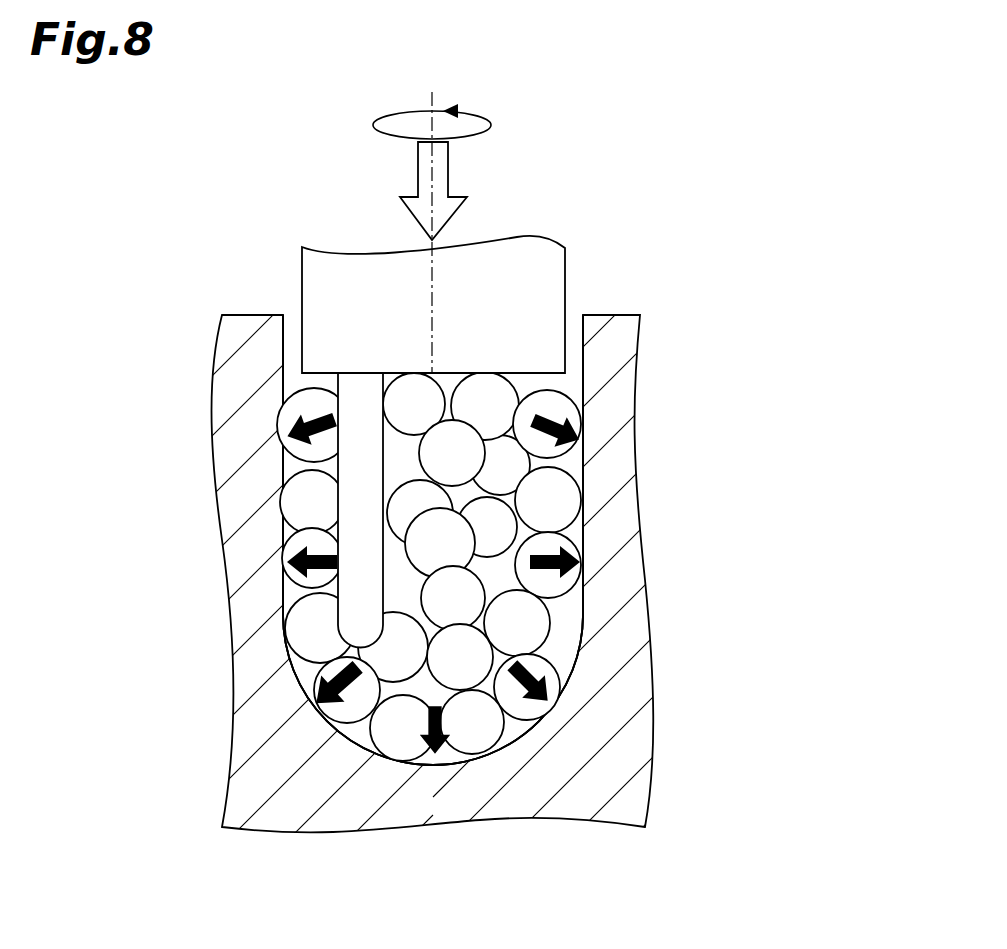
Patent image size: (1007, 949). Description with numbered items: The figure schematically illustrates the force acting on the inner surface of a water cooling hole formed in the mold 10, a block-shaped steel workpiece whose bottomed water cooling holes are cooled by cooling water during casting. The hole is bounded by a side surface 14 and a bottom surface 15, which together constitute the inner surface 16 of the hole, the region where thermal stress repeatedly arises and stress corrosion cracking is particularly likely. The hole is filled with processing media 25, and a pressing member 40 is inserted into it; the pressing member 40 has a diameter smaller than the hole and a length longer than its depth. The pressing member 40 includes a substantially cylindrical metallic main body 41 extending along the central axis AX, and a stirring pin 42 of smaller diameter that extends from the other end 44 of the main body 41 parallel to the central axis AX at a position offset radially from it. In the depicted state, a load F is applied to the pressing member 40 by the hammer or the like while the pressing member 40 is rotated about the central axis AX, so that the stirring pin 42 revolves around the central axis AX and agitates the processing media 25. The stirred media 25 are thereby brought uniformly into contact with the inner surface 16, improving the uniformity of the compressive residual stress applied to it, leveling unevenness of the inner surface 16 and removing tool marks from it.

The mold 10 is at (243, 732).
The side surface 14 is at (300, 596).
The bottom surface 15 is at (468, 748).
The inner surface 16 is at (341, 604).
The processing media 25 is at (530, 617).
The pressing member 40 is at (426, 400).
The main body 41 is at (550, 277).
The stirring pin 42 is at (352, 402).
The other end 44 is at (523, 390).
The central axis AX is at (455, 111).
The load F is at (448, 166).